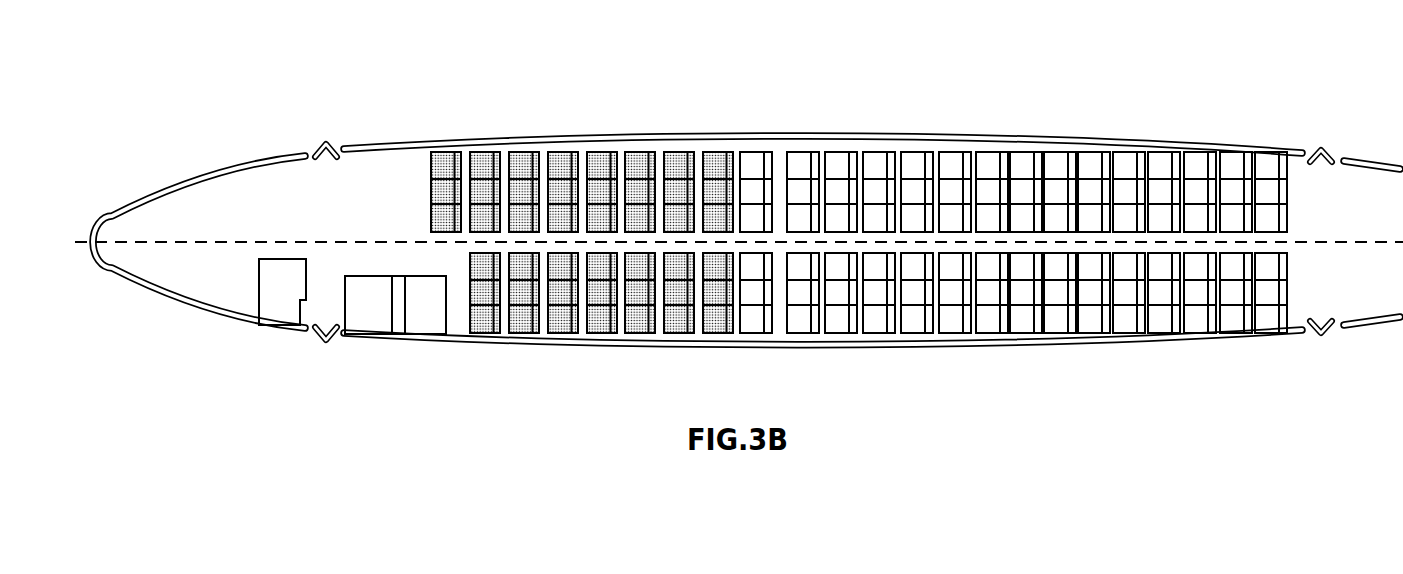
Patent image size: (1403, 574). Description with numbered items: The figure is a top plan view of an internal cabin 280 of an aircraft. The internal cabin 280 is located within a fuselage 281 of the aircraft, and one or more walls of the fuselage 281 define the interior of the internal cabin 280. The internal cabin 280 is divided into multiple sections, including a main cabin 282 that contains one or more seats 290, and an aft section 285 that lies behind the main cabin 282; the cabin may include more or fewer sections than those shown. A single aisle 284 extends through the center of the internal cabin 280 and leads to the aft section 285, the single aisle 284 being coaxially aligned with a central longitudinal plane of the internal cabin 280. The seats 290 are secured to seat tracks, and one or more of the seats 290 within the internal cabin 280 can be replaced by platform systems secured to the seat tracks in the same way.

The internal cabin 280 is at (342, 78).
The fuselage 281 is at (547, 140).
The main cabin 282 is at (483, 168).
The seats 290 is at (755, 172).
The single aisle 284 is at (878, 237).
The aft section 285 is at (1305, 177).